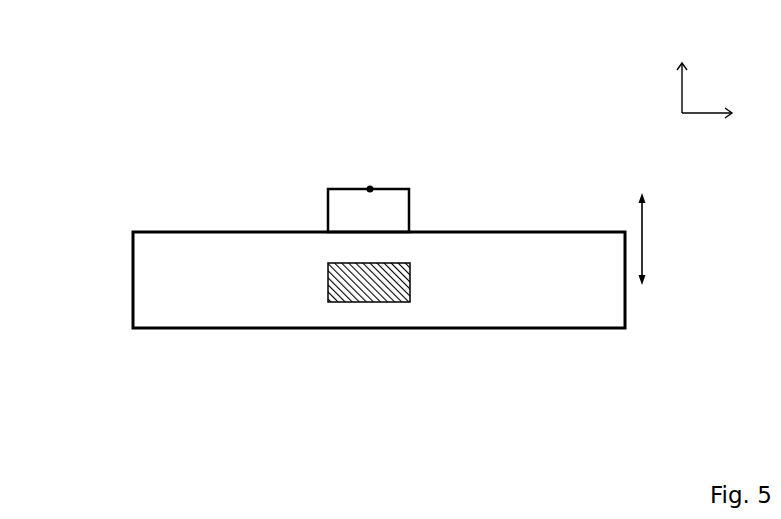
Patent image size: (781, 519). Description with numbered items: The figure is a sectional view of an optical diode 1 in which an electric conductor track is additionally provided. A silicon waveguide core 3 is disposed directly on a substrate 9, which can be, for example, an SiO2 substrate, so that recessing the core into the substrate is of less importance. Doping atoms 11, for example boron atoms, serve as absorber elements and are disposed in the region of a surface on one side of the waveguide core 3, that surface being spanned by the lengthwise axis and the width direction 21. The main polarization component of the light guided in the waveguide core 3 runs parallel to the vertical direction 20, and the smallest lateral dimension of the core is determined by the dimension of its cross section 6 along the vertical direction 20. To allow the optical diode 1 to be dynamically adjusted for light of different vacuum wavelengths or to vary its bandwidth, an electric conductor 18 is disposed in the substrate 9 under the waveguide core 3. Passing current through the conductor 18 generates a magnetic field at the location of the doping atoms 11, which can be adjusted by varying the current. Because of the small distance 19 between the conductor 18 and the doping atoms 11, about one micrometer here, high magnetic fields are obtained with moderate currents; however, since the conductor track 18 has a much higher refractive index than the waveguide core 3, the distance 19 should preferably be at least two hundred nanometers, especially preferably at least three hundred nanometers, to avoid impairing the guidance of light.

The optical diode 1 is at (89, 127).
The Si waveguide core 3 is at (326, 201).
The cross section 6 is at (407, 181).
The substrate 9 is at (206, 288).
The doping atoms 11 is at (423, 155).
The electric conductor 18 is at (391, 330).
The distance 19 is at (692, 256).
The vertical direction 20 is at (680, 73).
The width direction 21 is at (724, 114).